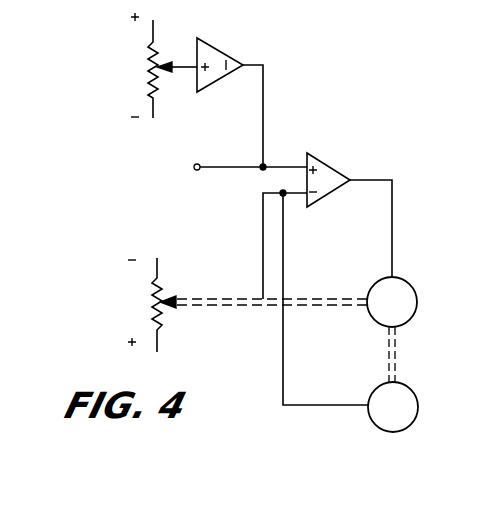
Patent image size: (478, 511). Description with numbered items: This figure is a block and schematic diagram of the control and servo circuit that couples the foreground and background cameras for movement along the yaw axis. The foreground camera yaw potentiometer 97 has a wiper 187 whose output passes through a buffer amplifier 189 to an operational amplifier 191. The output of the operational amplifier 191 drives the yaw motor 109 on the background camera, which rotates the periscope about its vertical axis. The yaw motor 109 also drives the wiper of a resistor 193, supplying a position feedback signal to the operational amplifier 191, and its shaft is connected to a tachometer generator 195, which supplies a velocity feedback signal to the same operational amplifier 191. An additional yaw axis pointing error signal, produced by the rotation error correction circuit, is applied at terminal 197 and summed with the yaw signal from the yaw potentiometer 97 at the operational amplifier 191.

The foreground camera yaw potentiometer 97 is at (152, 47).
The wiper 187 is at (183, 67).
The buffer amplifier 189 is at (223, 50).
The operational amplifier 191 is at (335, 165).
The resistor 193 is at (160, 282).
The tachometer generator 195 is at (370, 395).
The terminal 197 is at (194, 167).
The yaw motor 109 is at (405, 280).